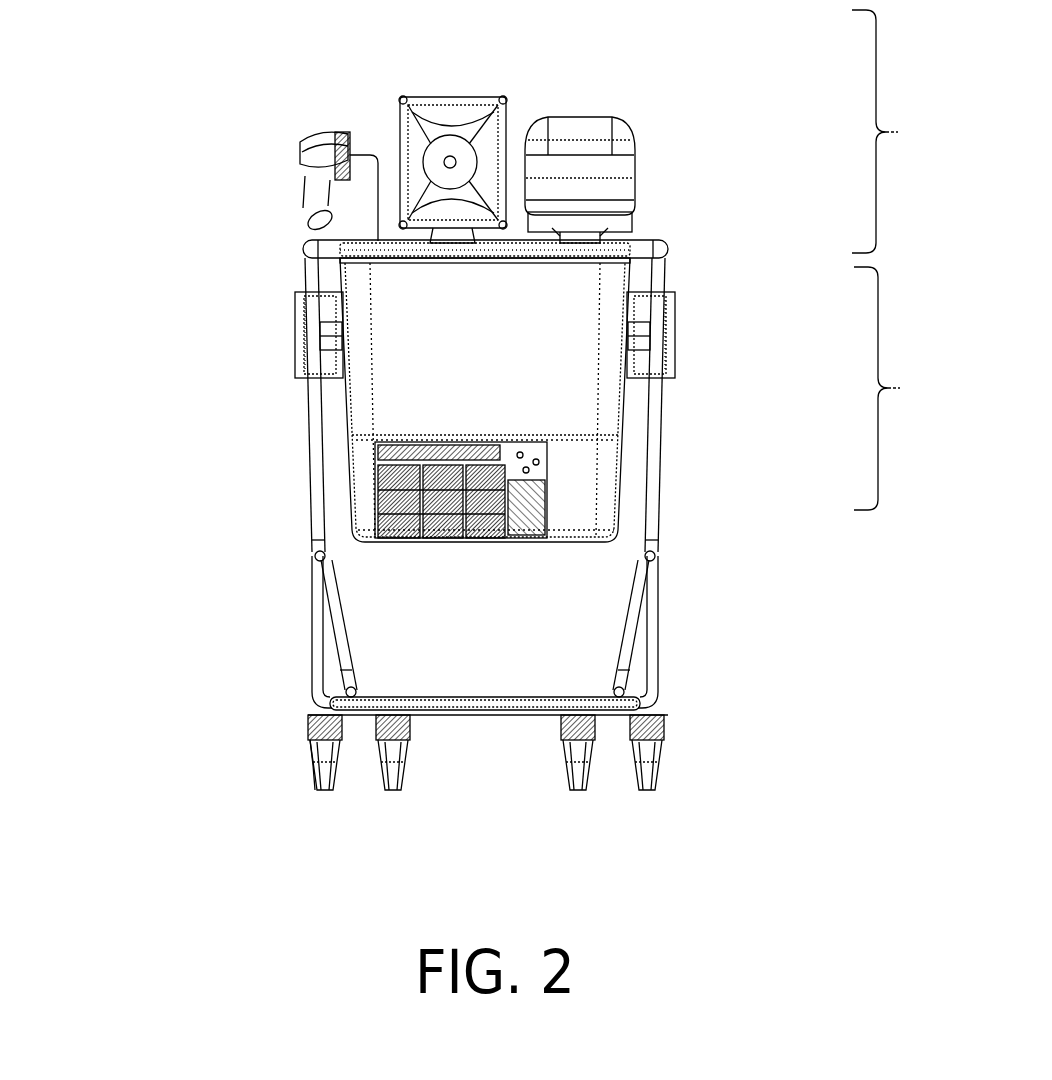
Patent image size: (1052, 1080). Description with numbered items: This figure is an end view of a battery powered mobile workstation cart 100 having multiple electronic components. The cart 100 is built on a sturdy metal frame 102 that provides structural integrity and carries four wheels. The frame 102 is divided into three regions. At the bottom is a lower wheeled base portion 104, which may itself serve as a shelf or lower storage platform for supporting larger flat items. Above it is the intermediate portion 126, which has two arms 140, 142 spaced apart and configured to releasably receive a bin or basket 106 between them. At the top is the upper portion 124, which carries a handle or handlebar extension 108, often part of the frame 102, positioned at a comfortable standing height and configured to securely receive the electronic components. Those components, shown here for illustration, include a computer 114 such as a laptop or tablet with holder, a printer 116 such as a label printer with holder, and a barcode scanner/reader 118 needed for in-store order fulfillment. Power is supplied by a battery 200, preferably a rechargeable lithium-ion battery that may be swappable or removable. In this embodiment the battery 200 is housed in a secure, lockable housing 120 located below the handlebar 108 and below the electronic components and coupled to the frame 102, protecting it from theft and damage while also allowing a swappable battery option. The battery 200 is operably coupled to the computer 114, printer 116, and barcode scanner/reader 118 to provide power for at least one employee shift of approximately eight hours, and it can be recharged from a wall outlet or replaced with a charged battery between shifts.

The battery powered mobile workstation cart 100 is at (186, 114).
The frame 102 is at (650, 485).
The lower wheeled base portion 104 is at (518, 695).
The basket 106 is at (624, 413).
The handlebar extension 108 is at (655, 242).
The computer 114 is at (450, 98).
The printer 116 is at (638, 150).
The barcode scanner/reader 118 is at (302, 182).
The housing 120 is at (365, 503).
The upper portion 124 is at (903, 131).
The intermediate portion 126 is at (906, 388).
The arm 140 is at (327, 333).
The arm 142 is at (640, 330).
The battery 200 is at (380, 493).